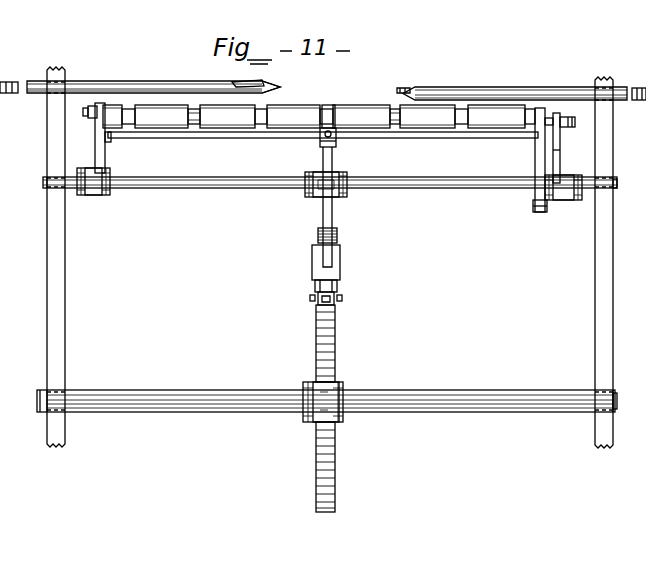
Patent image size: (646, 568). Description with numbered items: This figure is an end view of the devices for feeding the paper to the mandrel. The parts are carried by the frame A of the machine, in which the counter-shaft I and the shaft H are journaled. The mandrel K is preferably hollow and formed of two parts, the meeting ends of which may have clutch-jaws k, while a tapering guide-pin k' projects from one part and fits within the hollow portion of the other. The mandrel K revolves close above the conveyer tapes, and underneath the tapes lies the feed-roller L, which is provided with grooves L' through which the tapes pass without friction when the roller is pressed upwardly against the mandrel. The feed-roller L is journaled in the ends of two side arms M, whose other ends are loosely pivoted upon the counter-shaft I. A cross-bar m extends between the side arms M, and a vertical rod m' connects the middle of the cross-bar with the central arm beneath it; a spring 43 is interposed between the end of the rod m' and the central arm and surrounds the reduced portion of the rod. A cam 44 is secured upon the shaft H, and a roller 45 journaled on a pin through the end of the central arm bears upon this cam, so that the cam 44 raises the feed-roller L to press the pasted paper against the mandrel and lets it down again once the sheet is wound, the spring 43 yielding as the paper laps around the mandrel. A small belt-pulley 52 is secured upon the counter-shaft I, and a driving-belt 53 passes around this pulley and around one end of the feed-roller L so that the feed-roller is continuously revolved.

The frame A is at (68, 352).
The mandrel K is at (166, 80).
The clutch-jaws k is at (319, 81).
The tapering guide-pin k' is at (275, 86).
The feed-roller L is at (319, 107).
The grooves L' is at (287, 140).
The cross-bar m is at (323, 148).
The vertical rod m' is at (335, 186).
The side arms M is at (108, 157).
The driving-belt 53 is at (535, 150).
The belt-pulley 52 is at (537, 202).
The counter-shaft I is at (231, 190).
The spring 43 is at (337, 239).
The roller 45 is at (335, 317).
The cam 44 is at (340, 472).
The shaft H is at (447, 398).